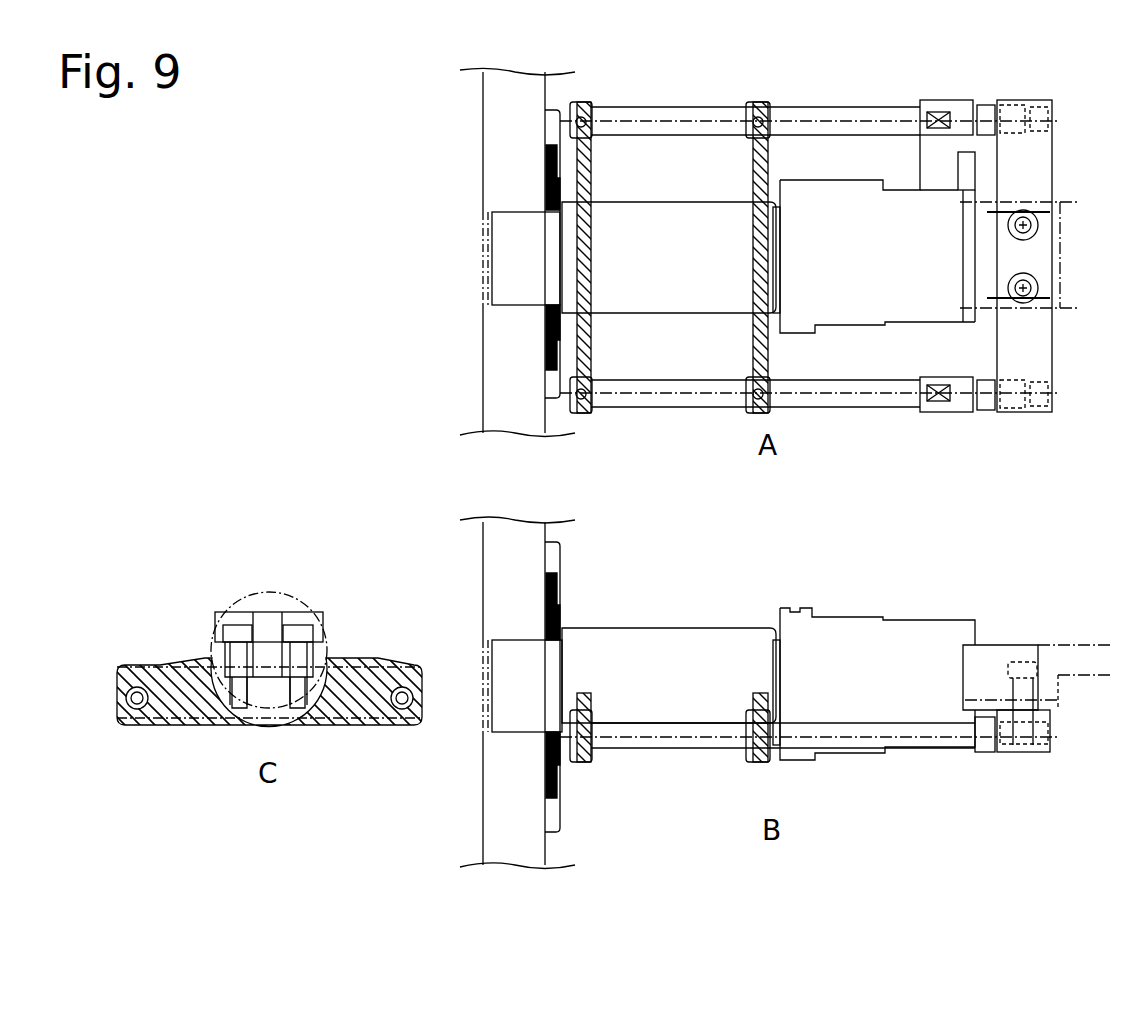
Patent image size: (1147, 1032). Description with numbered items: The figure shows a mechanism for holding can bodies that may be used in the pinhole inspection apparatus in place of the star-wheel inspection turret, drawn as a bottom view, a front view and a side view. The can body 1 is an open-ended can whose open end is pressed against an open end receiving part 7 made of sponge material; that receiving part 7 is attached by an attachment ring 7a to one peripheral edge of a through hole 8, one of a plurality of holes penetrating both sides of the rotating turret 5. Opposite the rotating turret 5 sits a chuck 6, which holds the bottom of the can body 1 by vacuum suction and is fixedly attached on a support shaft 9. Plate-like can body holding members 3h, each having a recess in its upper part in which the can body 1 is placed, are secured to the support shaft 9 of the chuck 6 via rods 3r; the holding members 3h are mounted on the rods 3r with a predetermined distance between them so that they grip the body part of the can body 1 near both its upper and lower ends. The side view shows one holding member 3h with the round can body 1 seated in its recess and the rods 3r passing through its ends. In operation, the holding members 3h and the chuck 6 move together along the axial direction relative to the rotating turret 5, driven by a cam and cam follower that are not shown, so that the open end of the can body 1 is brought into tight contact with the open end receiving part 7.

The can body 1 is at (288, 593).
The can body holding member 3h is at (757, 348).
The rod 3r is at (684, 120).
The rotating turret 5 is at (517, 468).
The chuck 6 is at (874, 447).
The open end receiving part 7 is at (563, 190).
The attachment ring 7a is at (553, 118).
The through hole 8 is at (505, 245).
The support shaft 9 is at (1032, 250).